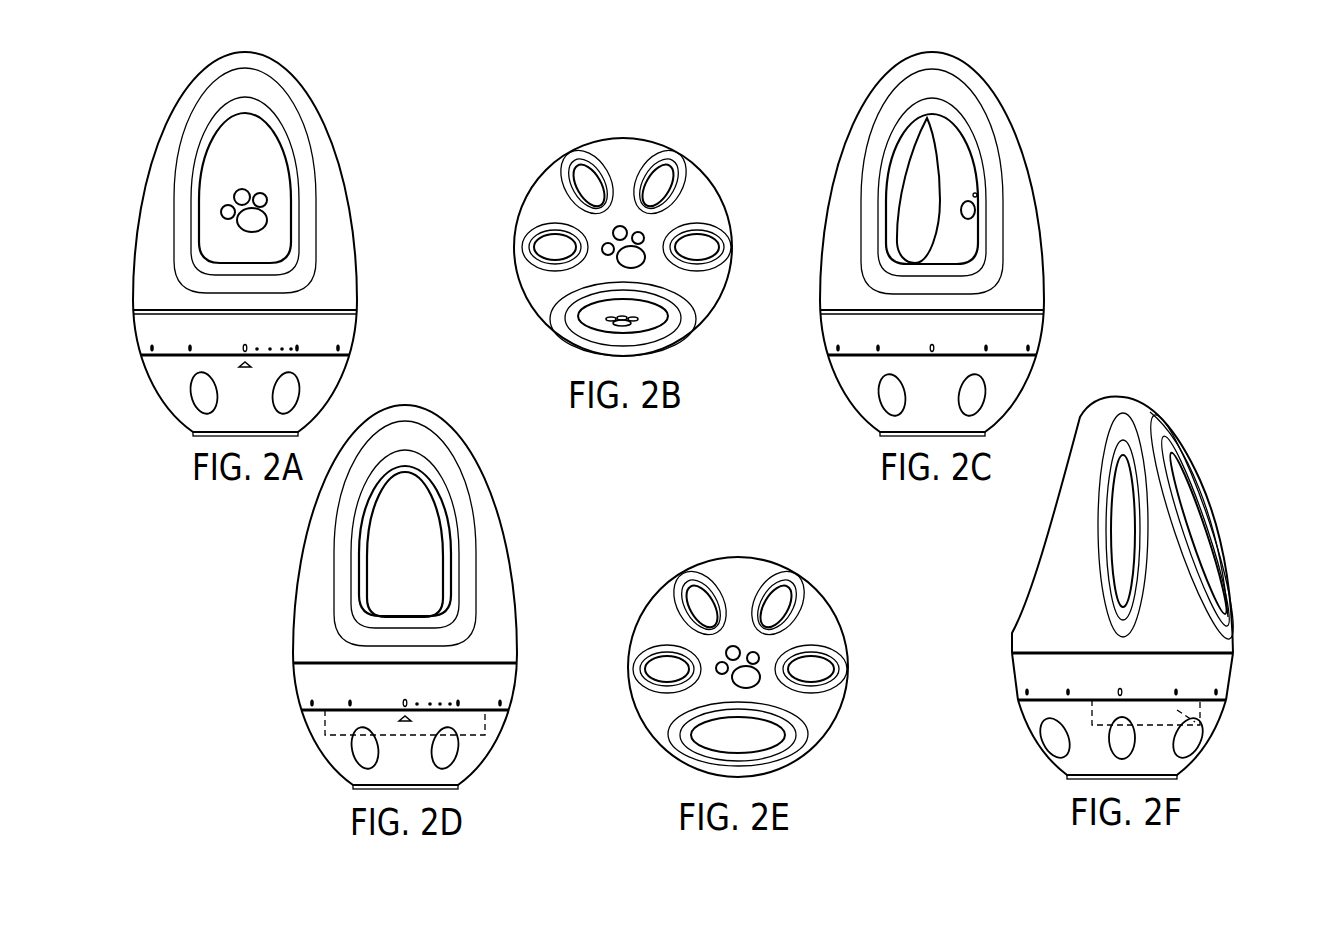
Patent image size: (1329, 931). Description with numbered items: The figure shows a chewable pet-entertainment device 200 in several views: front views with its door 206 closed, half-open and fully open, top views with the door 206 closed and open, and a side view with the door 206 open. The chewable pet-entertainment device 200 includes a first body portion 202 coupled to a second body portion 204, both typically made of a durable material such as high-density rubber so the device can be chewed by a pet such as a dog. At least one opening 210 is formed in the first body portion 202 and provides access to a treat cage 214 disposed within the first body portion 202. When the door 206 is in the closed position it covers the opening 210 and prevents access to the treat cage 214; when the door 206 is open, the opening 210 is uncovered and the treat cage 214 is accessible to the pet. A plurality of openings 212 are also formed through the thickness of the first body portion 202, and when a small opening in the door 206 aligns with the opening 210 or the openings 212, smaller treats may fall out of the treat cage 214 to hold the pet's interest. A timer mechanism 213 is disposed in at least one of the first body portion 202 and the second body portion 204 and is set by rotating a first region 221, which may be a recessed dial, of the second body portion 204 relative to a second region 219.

In FIG. 2A, the chewable pet-entertainment device 200 is at (337, 90).
In FIG. 2B, the chewable pet-entertainment device 200 is at (728, 153).
In FIG. 2C, the chewable pet-entertainment device 200 is at (1010, 90).
In FIG. 2D, the chewable pet-entertainment device 200 is at (485, 443).
In FIG. 2E, the chewable pet-entertainment device 200 is at (838, 578).
In FIG. 2F, the chewable pet-entertainment device 200 is at (1209, 433).
In FIG. 2A, the first body portion 202 is at (327, 184).
In FIG. 2B, the first body portion 202 is at (713, 200).
In FIG. 2C, the first body portion 202 is at (1022, 213).
In FIG. 2D, the first body portion 202 is at (490, 550).
In FIG. 2E, the first body portion 202 is at (823, 620).
In FIG. 2F, the first body portion 202 is at (1210, 490).
In FIG. 2A, the second body portion 204 is at (143, 357).
In FIG. 2C, the second body portion 204 is at (830, 357).
In FIG. 2D, the second body portion 204 is at (302, 711).
In FIG. 2F, the second body portion 204 is at (1017, 700).
In FIG. 2A, the door 206 is at (223, 172).
In FIG. 2B, the door 206 is at (600, 321).
In FIG. 2C, the door 206 is at (960, 227).
In FIG. 2A, the opening 210 is at (277, 152).
In FIG. 2B, the opening 210 is at (667, 317).
In FIG. 2C, the opening 210 is at (973, 183).
In FIG. 2D, the opening 210 is at (438, 517).
In FIG. 2F, the opening 210 is at (1063, 497).
In FIG. 2F, the plurality of openings 212 is at (1130, 465).
In FIG. 2D, the timer mechanism 213 is at (490, 728).
In FIG. 2F, the timer mechanism 213 is at (1200, 730).
In FIG. 2C, the treat cage 214 is at (885, 213).
In FIG. 2D, the treat cage 214 is at (428, 577).
In FIG. 2F, the treat cage 214 is at (1200, 565).
In FIG. 2A, the second region 219 is at (348, 317).
In FIG. 2C, the second region 219 is at (1035, 317).
In FIG. 2D, the second region 219 is at (503, 672).
In FIG. 2F, the second region 219 is at (1223, 662).
In FIG. 2A, the first region 221 is at (172, 390).
In FIG. 2C, the first region 221 is at (858, 390).
In FIG. 2D, the first region 221 is at (330, 745).
In FIG. 2F, the first region 221 is at (1048, 733).